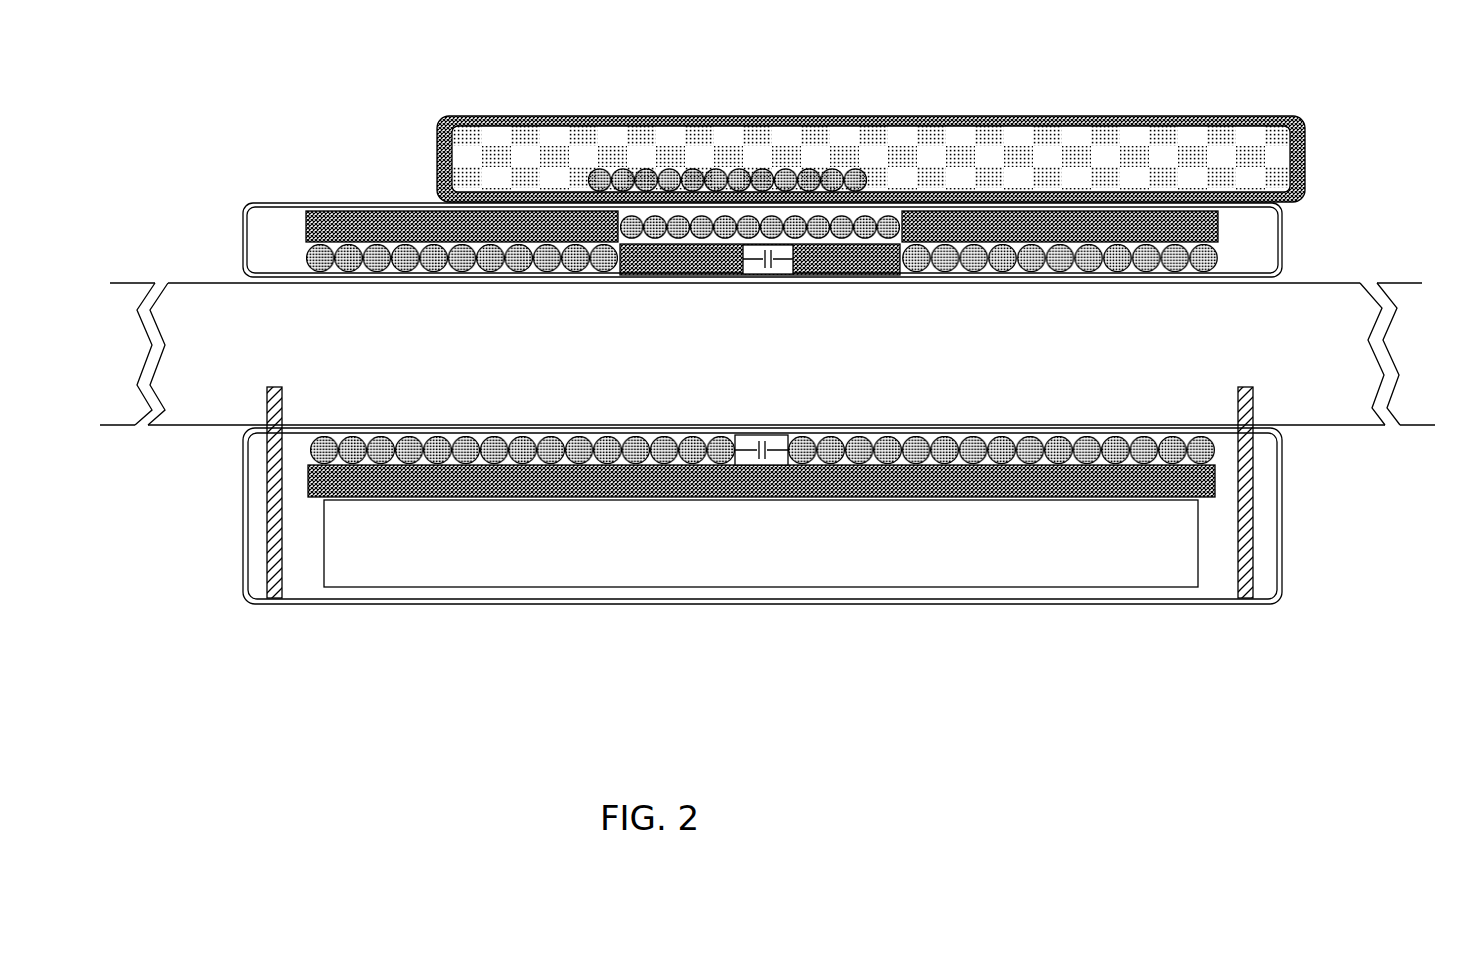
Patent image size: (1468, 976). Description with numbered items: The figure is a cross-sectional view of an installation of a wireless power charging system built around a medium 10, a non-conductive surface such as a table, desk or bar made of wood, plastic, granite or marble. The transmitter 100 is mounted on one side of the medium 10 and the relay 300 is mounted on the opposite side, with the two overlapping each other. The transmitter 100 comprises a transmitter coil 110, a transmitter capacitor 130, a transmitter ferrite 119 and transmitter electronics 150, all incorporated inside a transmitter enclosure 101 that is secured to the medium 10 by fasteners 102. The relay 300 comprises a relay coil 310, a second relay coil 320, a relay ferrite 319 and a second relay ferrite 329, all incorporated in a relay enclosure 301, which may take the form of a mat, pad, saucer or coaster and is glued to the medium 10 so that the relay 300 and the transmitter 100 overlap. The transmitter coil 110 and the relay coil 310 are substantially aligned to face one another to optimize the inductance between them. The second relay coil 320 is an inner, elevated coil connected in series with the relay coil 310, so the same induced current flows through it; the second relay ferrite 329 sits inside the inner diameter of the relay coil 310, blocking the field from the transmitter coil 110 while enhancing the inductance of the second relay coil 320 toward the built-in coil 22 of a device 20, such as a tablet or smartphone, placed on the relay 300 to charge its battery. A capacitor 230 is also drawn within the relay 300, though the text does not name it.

The medium 10 is at (172, 426).
The device 20 is at (648, 116).
The built-in coil 22 is at (793, 172).
The relay 300 is at (241, 203).
The relay enclosure 301 is at (330, 205).
The relay ferrite 319 is at (398, 211).
The relay coil 310 is at (488, 272).
The second relay coil 320 is at (718, 276).
The second relay ferrite 329 is at (866, 277).
The receiver capacitor 230 is at (753, 270).
The transmitter 100 is at (240, 604).
The transmitter enclosure 101 is at (242, 537).
The fasteners 102 is at (277, 585).
The transmitter ferrite 119 is at (1218, 475).
The transmitter coil 110 is at (645, 430).
The transmitter capacitor 130 is at (780, 433).
The transmitter electronics 150 is at (530, 590).